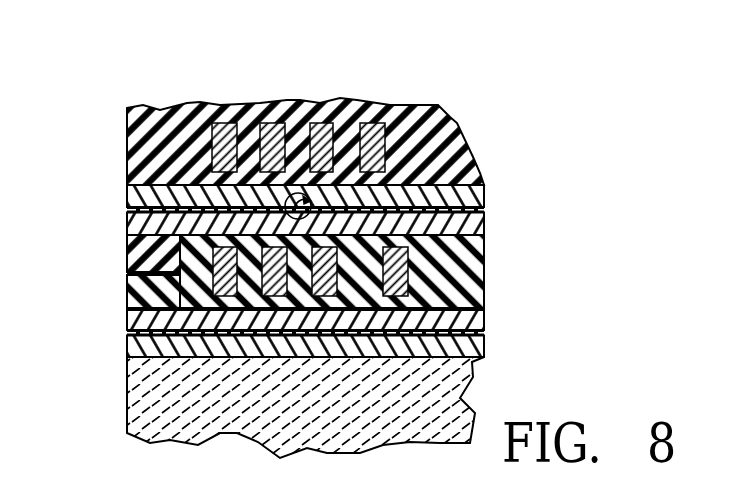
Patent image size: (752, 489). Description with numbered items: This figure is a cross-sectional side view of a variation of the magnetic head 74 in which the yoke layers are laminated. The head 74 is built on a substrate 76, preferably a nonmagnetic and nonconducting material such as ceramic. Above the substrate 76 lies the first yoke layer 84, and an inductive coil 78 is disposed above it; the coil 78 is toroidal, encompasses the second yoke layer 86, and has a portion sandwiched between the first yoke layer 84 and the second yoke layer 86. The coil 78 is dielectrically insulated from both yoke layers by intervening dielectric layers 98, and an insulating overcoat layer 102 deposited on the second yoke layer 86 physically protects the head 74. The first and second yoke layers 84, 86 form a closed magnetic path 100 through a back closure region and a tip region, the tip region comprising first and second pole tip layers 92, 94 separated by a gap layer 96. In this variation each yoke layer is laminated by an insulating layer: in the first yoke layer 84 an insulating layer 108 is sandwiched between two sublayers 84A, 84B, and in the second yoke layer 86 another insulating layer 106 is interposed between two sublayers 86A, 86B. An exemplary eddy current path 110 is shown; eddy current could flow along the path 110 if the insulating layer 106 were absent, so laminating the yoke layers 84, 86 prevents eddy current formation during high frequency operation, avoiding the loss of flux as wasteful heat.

The magnetic head 74 is at (101, 73).
The insulating overcoat layer 102 is at (190, 110).
The eddy current path 110 is at (313, 200).
The second yoke layer 86 is at (311, 184).
The sublayer of second yoke layer 86B is at (485, 192).
The insulating layer 106 is at (486, 210).
The sublayer of second yoke layer 86A is at (475, 228).
The closed magnetic path 100 is at (312, 275).
The inductive coil 78 is at (425, 265).
The dielectric layers 98 is at (470, 304).
The second pole tip layer 94 is at (135, 258).
The gap layer 96 is at (140, 276).
The first pole tip layer 92 is at (125, 294).
The first yoke layer 84 is at (319, 347).
The sublayer of first yoke layer 84B is at (470, 317).
The insulating layer 108 is at (470, 333).
The sublayer of first yoke layer 84A is at (477, 351).
The substrate 76 is at (150, 398).